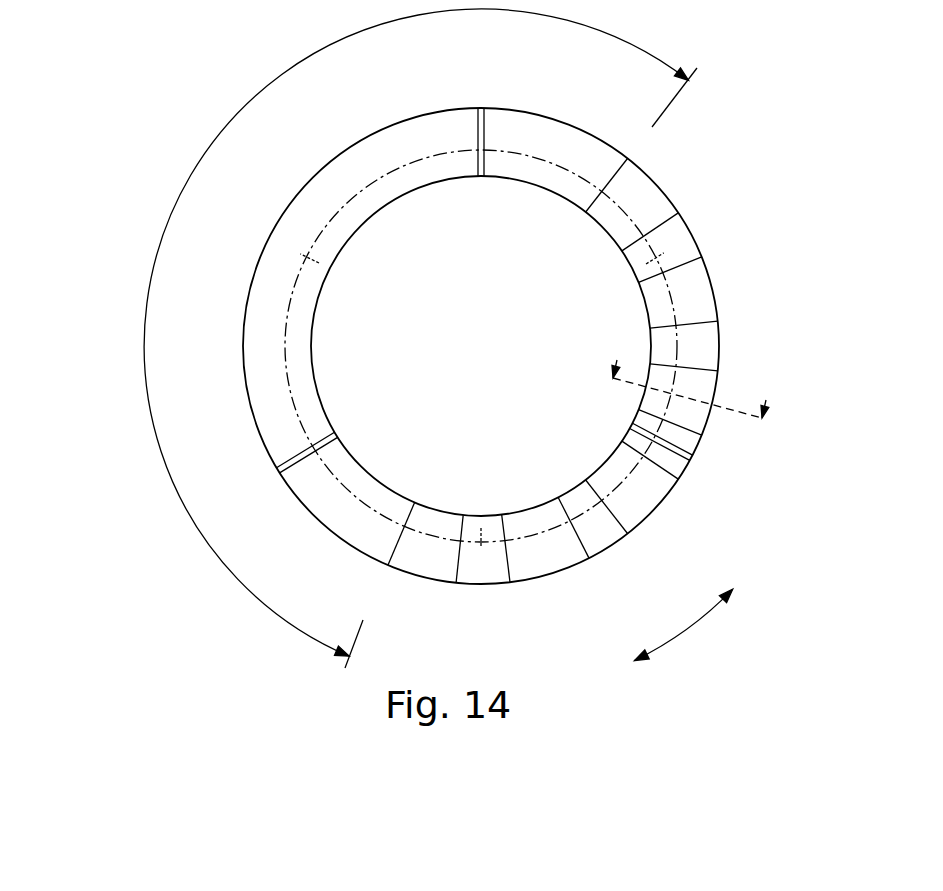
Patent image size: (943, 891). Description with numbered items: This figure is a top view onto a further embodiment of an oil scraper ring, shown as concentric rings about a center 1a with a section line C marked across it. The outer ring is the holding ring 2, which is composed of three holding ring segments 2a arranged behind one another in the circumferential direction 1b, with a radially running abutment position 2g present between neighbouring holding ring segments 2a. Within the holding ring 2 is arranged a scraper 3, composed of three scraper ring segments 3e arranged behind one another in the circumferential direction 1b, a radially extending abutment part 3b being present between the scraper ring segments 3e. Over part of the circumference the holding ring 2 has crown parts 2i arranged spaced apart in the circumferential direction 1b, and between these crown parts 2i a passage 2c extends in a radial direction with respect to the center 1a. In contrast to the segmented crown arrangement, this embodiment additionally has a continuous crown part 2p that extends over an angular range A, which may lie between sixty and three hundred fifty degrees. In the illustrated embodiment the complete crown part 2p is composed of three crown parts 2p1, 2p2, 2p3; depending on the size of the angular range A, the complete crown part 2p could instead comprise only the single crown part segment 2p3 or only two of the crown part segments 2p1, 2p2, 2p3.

The center 1a is at (482, 347).
The circumferential direction 1b is at (700, 640).
The holding ring 2 is at (482, 337).
The holding ring segment 2a is at (367, 158).
The passage 2c is at (430, 525).
The abutment position 2g is at (487, 111).
The crown part 2i is at (665, 232).
The continuous crown part 2p is at (416, 332).
The crown part 2p1 is at (367, 533).
The crown part 2p2 is at (545, 130).
The crown part 2p3 is at (278, 268).
The scraper 3 is at (553, 349).
The abutment part 3b is at (662, 266).
The scraper ring segment 3e is at (542, 173).
The angular range A is at (145, 367).
The sectional line C is at (692, 378).